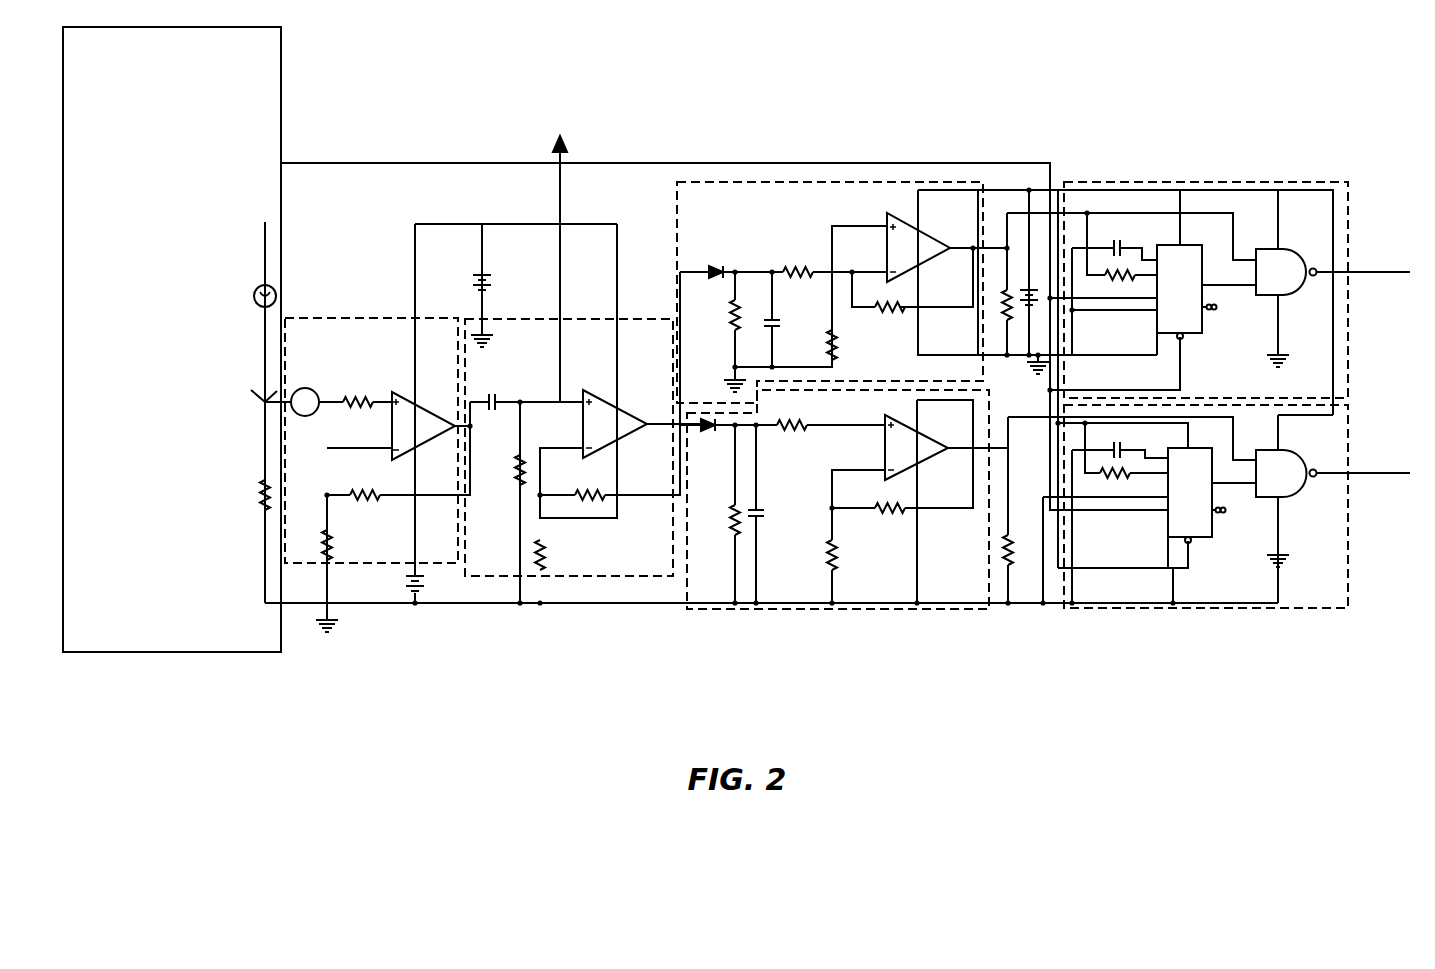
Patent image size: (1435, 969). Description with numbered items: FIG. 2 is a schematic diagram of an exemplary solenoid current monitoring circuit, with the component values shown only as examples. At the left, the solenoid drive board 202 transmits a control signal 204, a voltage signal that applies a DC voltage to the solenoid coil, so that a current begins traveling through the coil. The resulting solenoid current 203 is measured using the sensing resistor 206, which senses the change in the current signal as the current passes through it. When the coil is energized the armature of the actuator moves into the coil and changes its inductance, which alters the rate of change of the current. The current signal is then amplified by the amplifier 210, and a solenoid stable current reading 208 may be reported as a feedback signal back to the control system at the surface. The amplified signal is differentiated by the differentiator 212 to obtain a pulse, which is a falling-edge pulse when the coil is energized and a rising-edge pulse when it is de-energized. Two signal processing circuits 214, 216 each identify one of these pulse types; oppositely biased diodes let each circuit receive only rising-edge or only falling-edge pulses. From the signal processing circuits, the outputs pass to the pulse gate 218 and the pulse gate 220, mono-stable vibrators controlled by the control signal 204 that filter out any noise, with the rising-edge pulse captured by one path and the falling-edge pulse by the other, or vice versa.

The solenoid drive board 202 is at (192, 61).
The solenoid current 203 is at (252, 300).
The control signal 204 is at (266, 163).
The resistor R1 206 is at (192, 496).
The solenoid stable current reading 208 is at (570, 146).
The amplifier 210 is at (368, 572).
The differentiator 212 is at (626, 585).
The signal processing circuit 214 is at (927, 620).
The signal processing circuit 216 is at (870, 172).
The pulse gate 218 is at (1235, 620).
The pulse gate 220 is at (1238, 172).